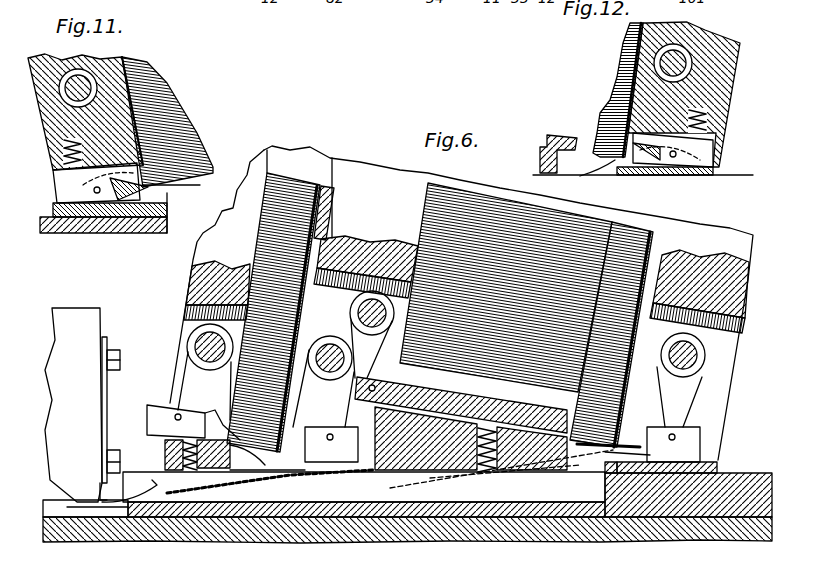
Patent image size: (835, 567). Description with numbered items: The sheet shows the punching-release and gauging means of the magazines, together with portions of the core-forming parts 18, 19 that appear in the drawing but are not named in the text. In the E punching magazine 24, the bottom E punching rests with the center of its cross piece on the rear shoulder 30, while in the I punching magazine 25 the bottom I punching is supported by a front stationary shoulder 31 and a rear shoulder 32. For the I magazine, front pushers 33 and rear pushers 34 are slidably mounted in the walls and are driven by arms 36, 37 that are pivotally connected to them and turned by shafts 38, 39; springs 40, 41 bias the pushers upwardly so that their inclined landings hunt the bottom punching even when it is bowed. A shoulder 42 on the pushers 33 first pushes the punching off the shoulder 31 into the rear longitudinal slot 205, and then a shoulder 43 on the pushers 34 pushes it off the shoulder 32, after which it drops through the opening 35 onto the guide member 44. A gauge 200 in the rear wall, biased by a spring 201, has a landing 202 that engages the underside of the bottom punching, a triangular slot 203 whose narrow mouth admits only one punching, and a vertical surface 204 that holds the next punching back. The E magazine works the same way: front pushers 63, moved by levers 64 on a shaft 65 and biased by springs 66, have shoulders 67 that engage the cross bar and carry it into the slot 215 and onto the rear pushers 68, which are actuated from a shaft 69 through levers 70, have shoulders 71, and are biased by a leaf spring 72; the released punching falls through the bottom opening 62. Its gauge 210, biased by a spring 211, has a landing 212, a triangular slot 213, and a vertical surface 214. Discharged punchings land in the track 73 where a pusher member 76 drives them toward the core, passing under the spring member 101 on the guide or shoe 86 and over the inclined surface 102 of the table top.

In FIG. 6, the core 18 is at (503, 200).
In FIG. 11, the core 18 is at (172, 88).
In FIG. 6, the pole piece 19 is at (288, 173).
In FIG. 12, the pole piece 19 is at (610, 67).
In FIG. 6, the E punching magazine 24 is at (483, 188).
In FIG. 6, the I punching magazine 25 is at (308, 160).
In FIG. 11, the shoulder 30 is at (160, 195).
In FIG. 6, the stationary shoulder 31 is at (223, 422).
In FIG. 12, the stationary shoulder 31 is at (573, 143).
In FIG. 6, the shoulder 32 is at (287, 447).
In FIG. 12, the shoulder 32 is at (613, 153).
In FIG. 6, the finger or pusher element 33 is at (152, 420).
In FIG. 6, the finger or pusher 34 is at (350, 453).
In FIG. 6, the opening 35 is at (243, 460).
In FIG. 12, the opening 35 is at (610, 163).
In FIG. 6, the arm 36 is at (183, 373).
In FIG. 6, the arm 37 is at (333, 413).
In FIG. 6, the shaft 38 is at (203, 342).
In FIG. 6, the shaft 39 is at (323, 347).
In FIG. 12, the shaft 39 is at (687, 55).
In FIG. 6, the spring 40 is at (165, 460).
In FIG. 6, the spring 41 is at (307, 467).
In FIG. 6, the shoulder 42 is at (186, 415).
In FIG. 12, the shoulder 42 is at (560, 138).
In FIG. 6, the shoulder 43 is at (293, 445).
In FIG. 6, the guide member 44 is at (252, 490).
In FIG. 6, the bottom opening 62 is at (575, 462).
In FIG. 6, the finger or pusher 63 is at (437, 403).
In FIG. 6, the lever 64 is at (380, 342).
In FIG. 6, the shaft 65 is at (370, 300).
In FIG. 6, the spring 66 is at (480, 467).
In FIG. 6, the shoulder 67 is at (618, 413).
In FIG. 6, the rear finger or pusher 68 is at (690, 442).
In FIG. 6, the shaft 69 is at (692, 355).
In FIG. 11, the shaft 69 is at (70, 92).
In FIG. 6, the lever 70 is at (685, 390).
In FIG. 6, the shoulder 71 is at (622, 450).
In FIG. 6, the leaf spring 72 is at (652, 462).
In FIG. 6, the track or guideway 73 is at (330, 487).
In FIG. 6, the pusher member 76 is at (732, 487).
In FIG. 6, the guide or shoe 86 is at (75, 317).
In FIG. 6, the spring member 101 is at (127, 500).
In FIG. 6, the inclined surface 102 is at (70, 503).
In FIG. 12, the control member or gauge 200 is at (700, 155).
In FIG. 12, the spring 201 is at (707, 117).
In FIG. 12, the landing 202 is at (613, 163).
In FIG. 12, the slot 203 is at (670, 157).
In FIG. 12, the vertical surface 204 is at (660, 147).
In FIG. 12, the longitudinal slot 205 is at (720, 177).
In FIG. 11, the control member or gauge 210 is at (53, 190).
In FIG. 11, the spring 211 is at (63, 153).
In FIG. 11, the landing 212 is at (157, 185).
In FIG. 11, the slot 213 is at (107, 193).
In FIG. 11, the vertical surface 214 is at (143, 157).
In FIG. 11, the longitudinal slot 215 is at (110, 173).